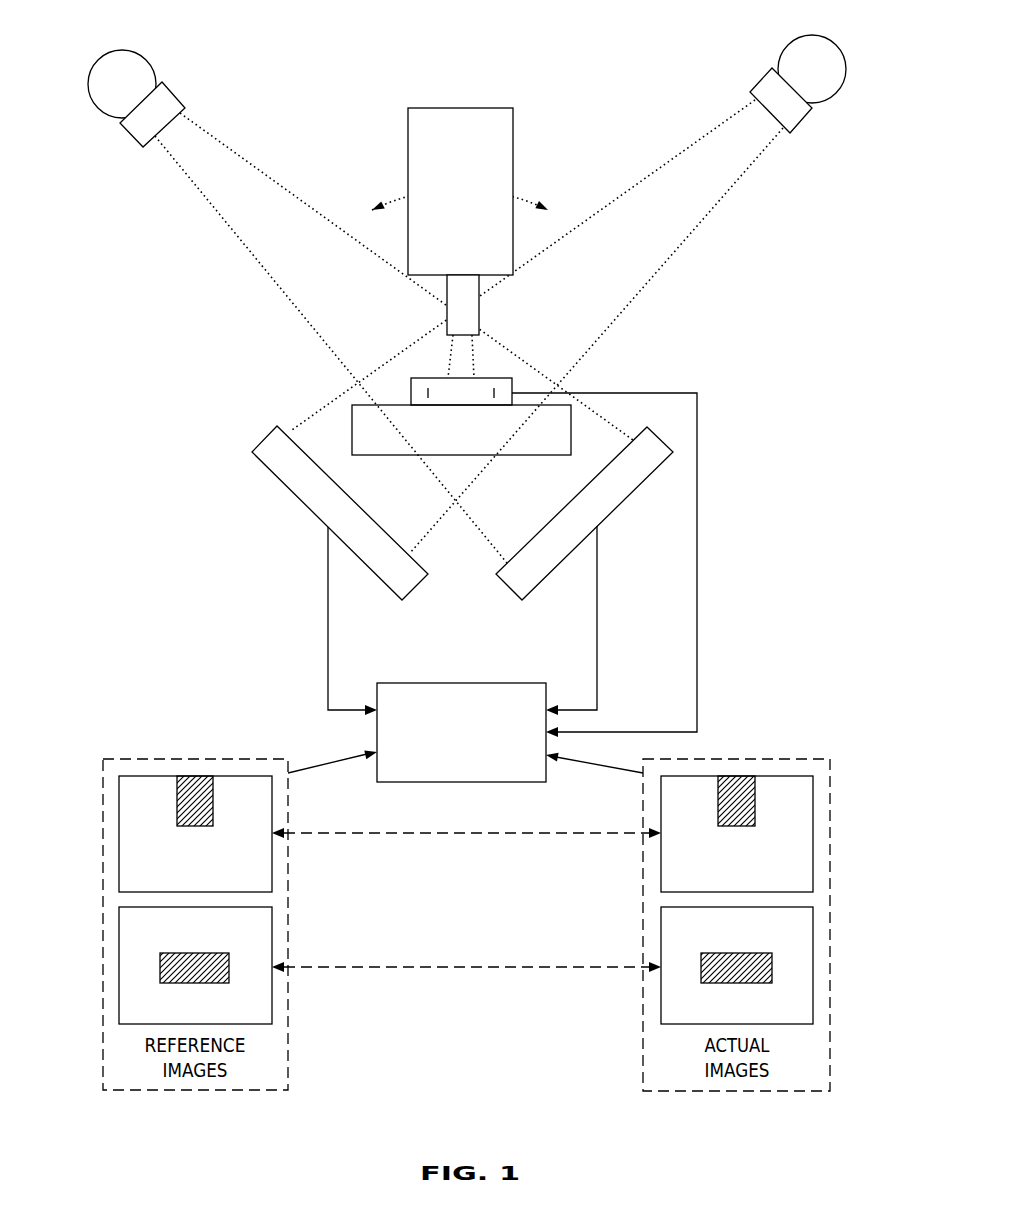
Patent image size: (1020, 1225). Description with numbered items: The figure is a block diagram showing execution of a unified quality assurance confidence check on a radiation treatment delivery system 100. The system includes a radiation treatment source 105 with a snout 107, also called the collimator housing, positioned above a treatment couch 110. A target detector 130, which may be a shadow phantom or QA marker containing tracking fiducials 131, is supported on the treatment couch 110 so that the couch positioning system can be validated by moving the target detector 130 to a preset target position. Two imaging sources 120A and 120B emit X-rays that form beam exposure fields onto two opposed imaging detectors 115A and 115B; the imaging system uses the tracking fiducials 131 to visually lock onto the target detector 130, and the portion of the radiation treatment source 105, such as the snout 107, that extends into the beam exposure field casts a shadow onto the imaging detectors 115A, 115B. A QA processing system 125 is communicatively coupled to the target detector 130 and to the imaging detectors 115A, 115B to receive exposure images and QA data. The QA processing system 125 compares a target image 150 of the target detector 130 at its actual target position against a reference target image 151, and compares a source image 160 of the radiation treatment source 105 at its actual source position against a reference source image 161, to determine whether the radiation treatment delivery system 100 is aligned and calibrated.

The radiation treatment delivery system 100 is at (174, 584).
The radiation treatment source 105 is at (460, 107).
The snout 107 is at (480, 310).
The treatment couch 110 is at (352, 432).
The imaging detector 115A is at (263, 466).
The imaging detector 115B is at (670, 455).
The imaging source 120A is at (758, 82).
The imaging source 120B is at (177, 93).
The QA processing system 125 is at (515, 755).
The target detector 130 is at (512, 388).
The tracking fiducials 131 is at (427, 390).
The target image 150 is at (814, 923).
The reference target image 151 is at (273, 941).
The source image 160 is at (814, 807).
The reference source image 161 is at (118, 807).